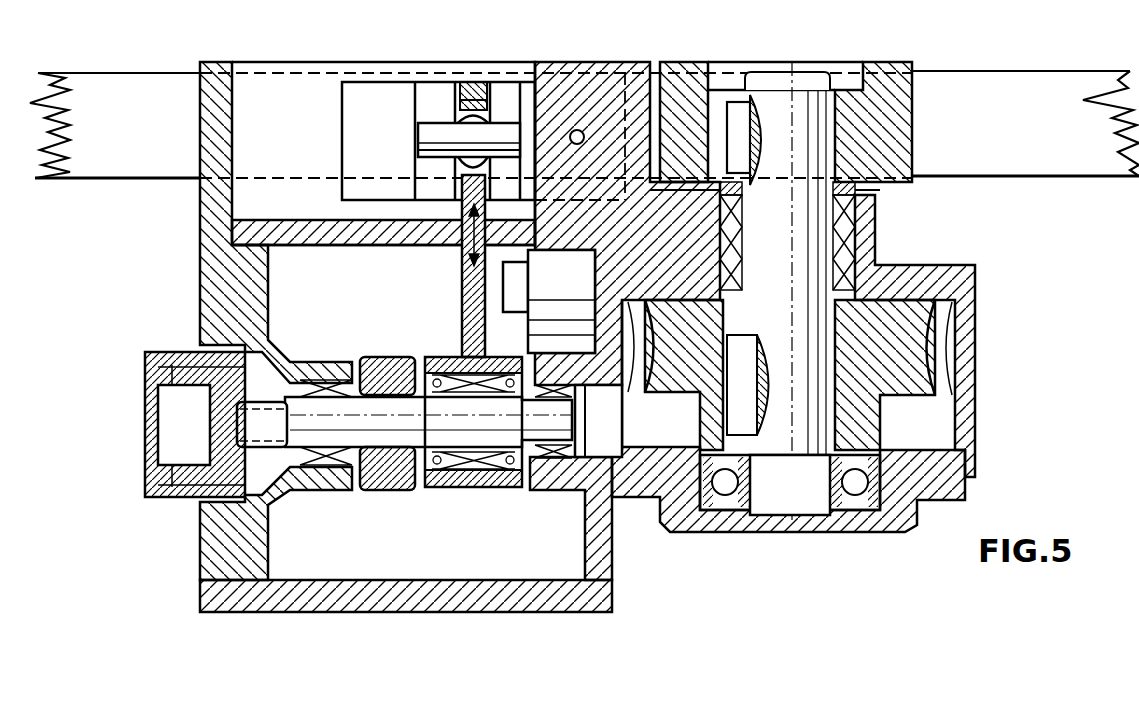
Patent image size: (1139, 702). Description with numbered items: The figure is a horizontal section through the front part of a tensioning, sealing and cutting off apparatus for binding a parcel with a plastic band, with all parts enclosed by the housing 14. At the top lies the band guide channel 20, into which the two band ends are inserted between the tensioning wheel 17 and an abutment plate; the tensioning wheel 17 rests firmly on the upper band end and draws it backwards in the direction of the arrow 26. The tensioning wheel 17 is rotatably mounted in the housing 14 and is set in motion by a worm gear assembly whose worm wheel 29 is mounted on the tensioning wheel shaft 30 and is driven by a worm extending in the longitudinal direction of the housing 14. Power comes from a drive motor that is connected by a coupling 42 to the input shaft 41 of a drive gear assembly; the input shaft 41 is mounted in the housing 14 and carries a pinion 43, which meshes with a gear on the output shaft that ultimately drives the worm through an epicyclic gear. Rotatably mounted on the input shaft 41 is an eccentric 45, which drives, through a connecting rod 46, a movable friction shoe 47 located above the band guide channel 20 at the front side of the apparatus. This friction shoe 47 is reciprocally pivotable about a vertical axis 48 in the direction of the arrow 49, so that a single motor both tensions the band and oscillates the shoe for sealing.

The housing 14 is at (218, 288).
The tensioning wheel 17 is at (882, 92).
The band guide channel 20 is at (262, 90).
The arrow 26 is at (150, 128).
The worm wheel 29 is at (908, 380).
The tensioning wheel shaft 30 is at (800, 258).
The input shaft 41 is at (308, 418).
The coupling 42 is at (190, 365).
The pinion 43 is at (378, 400).
The eccentric 45 is at (480, 440).
The connecting rod 46 is at (470, 284).
The movable friction shoe 47 is at (432, 105).
The vertical axis 48 is at (577, 130).
The arrow 49 is at (386, 108).